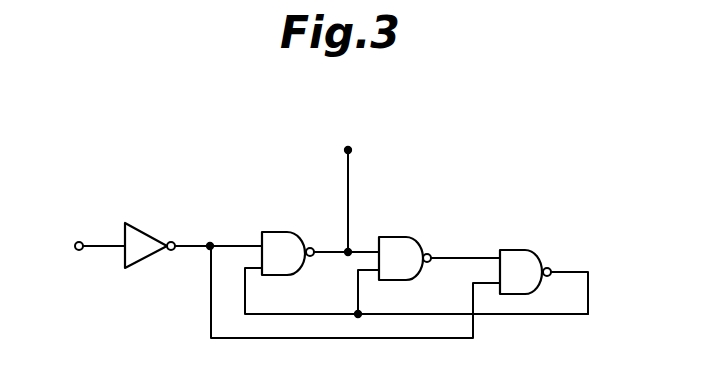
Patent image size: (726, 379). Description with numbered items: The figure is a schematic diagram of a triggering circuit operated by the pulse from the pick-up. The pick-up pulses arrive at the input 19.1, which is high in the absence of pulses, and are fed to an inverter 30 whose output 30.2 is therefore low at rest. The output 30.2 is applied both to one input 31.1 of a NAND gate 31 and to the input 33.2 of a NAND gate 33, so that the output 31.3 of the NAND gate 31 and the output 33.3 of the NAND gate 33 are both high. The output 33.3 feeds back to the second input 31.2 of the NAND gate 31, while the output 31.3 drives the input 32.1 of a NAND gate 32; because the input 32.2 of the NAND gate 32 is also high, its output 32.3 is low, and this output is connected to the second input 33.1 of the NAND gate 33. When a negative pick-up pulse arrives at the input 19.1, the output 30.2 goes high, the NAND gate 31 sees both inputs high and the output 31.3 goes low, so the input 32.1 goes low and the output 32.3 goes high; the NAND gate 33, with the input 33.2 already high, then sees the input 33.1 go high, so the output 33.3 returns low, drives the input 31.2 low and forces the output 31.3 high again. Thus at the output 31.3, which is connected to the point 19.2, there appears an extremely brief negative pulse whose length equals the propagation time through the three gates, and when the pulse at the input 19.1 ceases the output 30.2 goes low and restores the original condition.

The input 19.1 is at (94, 259).
The point 19.2 is at (350, 186).
The inverter 30 is at (146, 232).
The output of inverter 30.2 is at (173, 242).
The NAND gate 31 is at (276, 232).
The input of NAND gate 31.1 is at (260, 243).
The second input of NAND gate 31.2 is at (262, 270).
The output of NAND gate 31.3 is at (311, 247).
The NAND gate 32 is at (403, 237).
The input of NAND gate 32.1 is at (375, 248).
The input of NAND gate 32.2 is at (380, 273).
The output of NAND gate 32.3 is at (431, 252).
The NAND gate 33 is at (527, 250).
The second input of NAND gate 33.1 is at (498, 250).
The input of NAND gate 33.2 is at (500, 284).
The output of NAND gate 33.3 is at (552, 267).